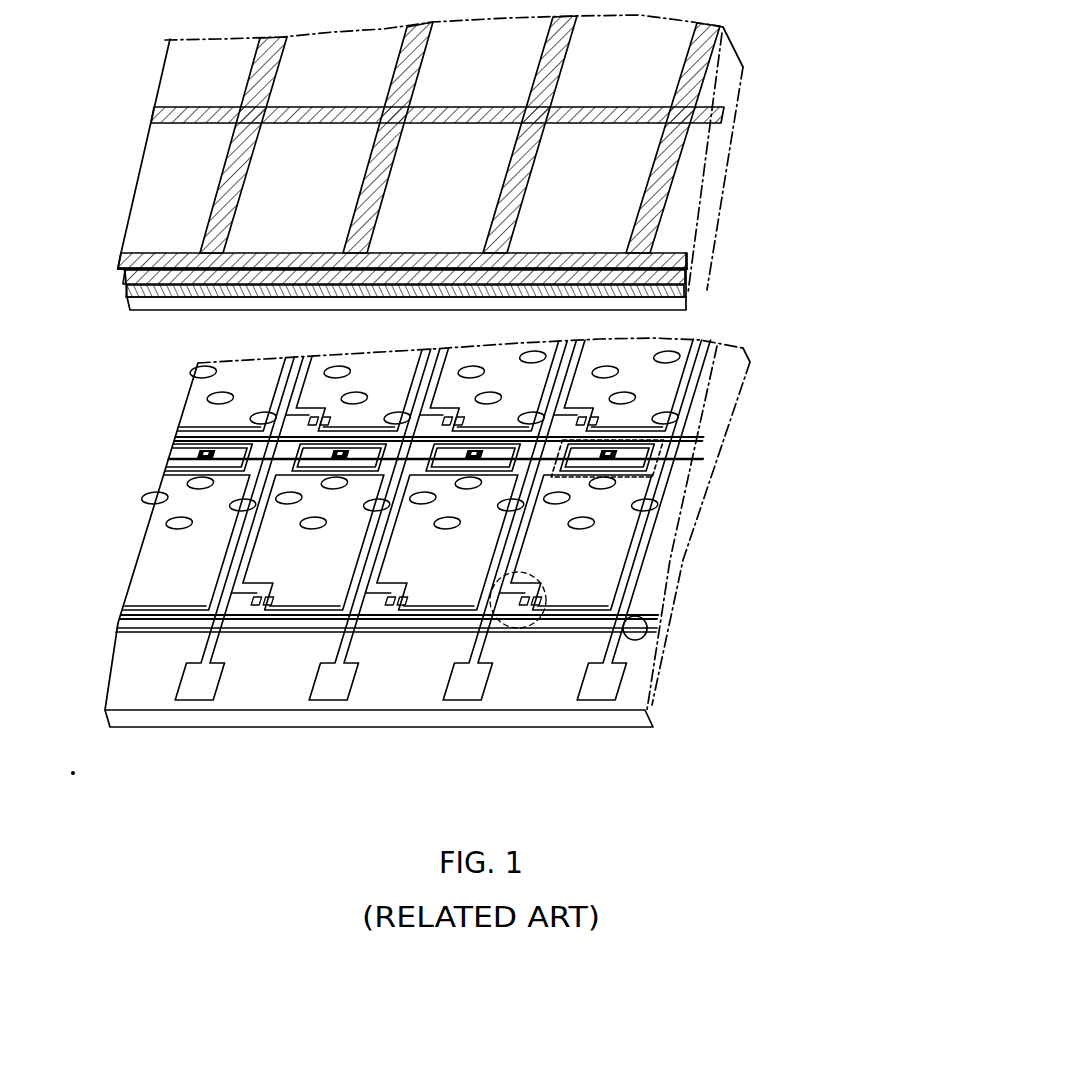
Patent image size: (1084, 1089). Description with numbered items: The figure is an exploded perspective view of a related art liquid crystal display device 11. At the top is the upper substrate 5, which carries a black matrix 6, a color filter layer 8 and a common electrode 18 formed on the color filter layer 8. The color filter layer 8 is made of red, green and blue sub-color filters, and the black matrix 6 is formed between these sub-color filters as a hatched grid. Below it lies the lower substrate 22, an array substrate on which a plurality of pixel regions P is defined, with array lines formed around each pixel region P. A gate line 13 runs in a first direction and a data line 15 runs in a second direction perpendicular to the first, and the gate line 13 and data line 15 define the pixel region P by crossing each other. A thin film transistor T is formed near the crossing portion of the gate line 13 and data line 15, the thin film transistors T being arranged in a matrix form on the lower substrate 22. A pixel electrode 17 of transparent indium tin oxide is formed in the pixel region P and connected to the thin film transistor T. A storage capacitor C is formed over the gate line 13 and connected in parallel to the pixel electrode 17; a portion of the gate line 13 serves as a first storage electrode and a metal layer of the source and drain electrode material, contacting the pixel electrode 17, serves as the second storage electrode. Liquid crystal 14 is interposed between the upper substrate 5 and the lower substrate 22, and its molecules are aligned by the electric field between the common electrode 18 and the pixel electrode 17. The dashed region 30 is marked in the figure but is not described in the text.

The upper substrate 5 is at (125, 270).
The black matrix 6 is at (707, 113).
The color filter layer 8 is at (662, 73).
The common electrode 18 is at (674, 300).
The liquid crystal display device 11 is at (812, 577).
The gate line 13 is at (640, 640).
The liquid crystal 14 is at (668, 406).
The data line 15 is at (460, 657).
The pixel electrode 17 is at (620, 587).
The lower substrate 22 is at (612, 717).
The spacer region 30 is at (654, 463).
The storage capacitor C is at (653, 483).
The pixel region P is at (638, 543).
The thin film transistor T is at (537, 622).